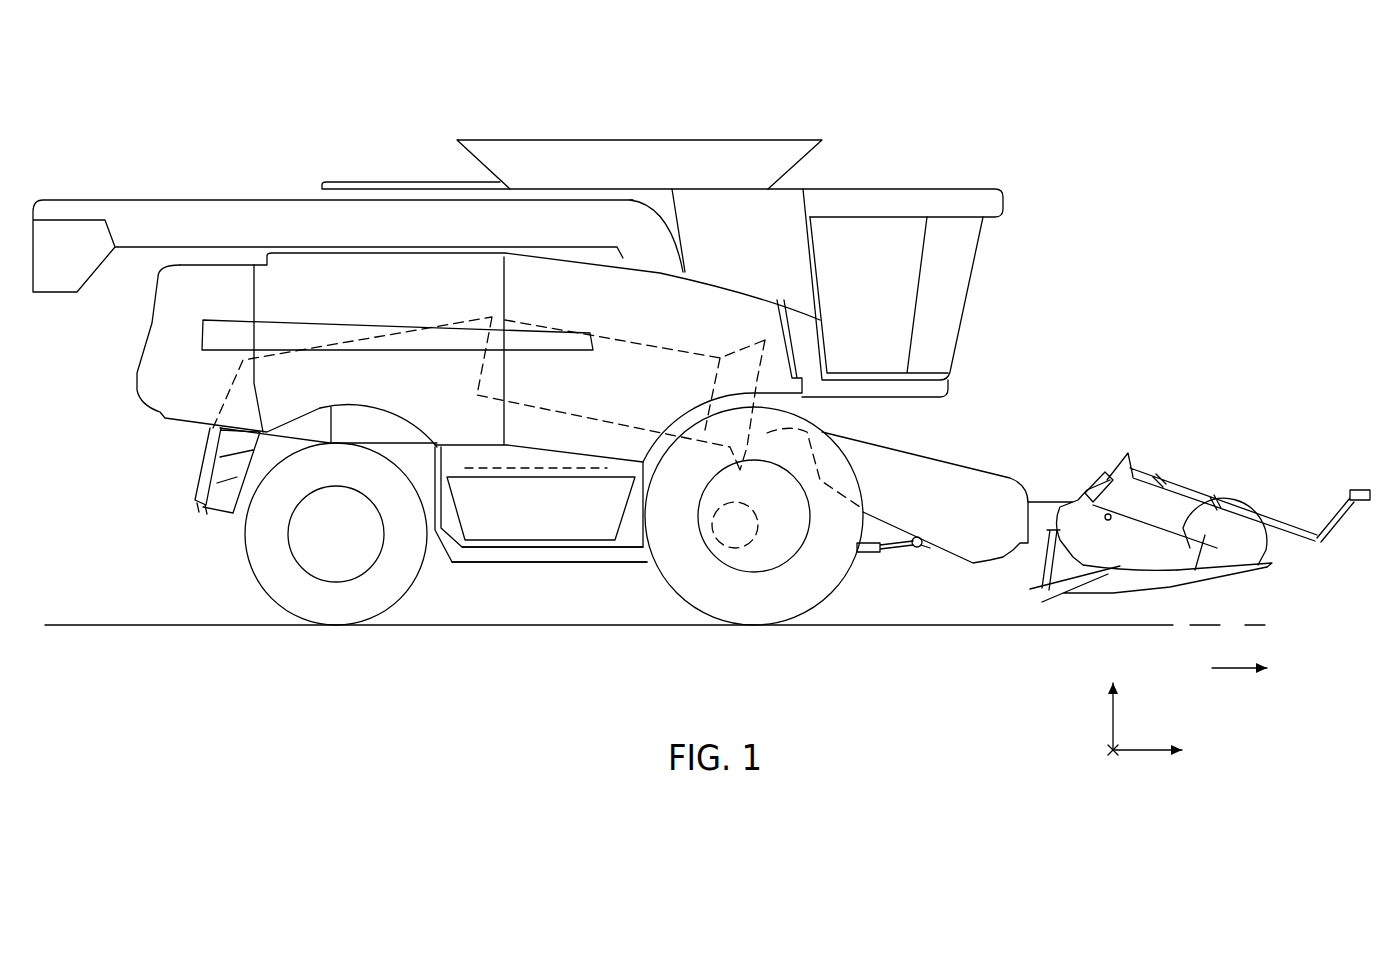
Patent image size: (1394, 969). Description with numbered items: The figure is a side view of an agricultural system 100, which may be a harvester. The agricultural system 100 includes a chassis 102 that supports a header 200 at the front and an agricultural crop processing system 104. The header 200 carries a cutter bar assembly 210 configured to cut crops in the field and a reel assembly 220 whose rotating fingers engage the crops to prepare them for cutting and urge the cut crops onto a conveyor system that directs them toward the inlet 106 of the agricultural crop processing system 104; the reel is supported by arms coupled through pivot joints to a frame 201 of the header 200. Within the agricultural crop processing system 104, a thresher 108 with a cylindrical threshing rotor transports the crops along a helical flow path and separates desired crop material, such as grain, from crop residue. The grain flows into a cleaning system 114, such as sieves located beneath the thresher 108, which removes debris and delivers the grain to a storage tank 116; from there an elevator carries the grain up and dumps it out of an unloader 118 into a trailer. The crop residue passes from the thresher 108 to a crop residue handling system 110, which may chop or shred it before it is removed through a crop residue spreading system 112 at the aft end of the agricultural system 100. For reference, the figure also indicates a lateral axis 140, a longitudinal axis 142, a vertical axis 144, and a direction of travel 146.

The agricultural system 100 is at (1003, 101).
The chassis 102 is at (482, 565).
The agricultural crop processing system 104 is at (622, 312).
The inlet 106 is at (833, 425).
The thresher 108 is at (640, 337).
The crop residue handling system 110 is at (303, 310).
The crop residue spreading system 112 is at (192, 481).
The cleaning system 114 is at (511, 475).
The storage tank 116 is at (566, 542).
The unloader 118 is at (170, 197).
The lateral axis 140 is at (1108, 750).
The longitudinal axis 142 is at (1140, 753).
The vertical axis 144 is at (1112, 720).
The direction of travel 146 is at (1233, 668).
The header 200 is at (1139, 426).
The frame 201 is at (1068, 515).
The cutter bar assembly 210 is at (1258, 583).
The reel assembly 220 is at (1238, 492).